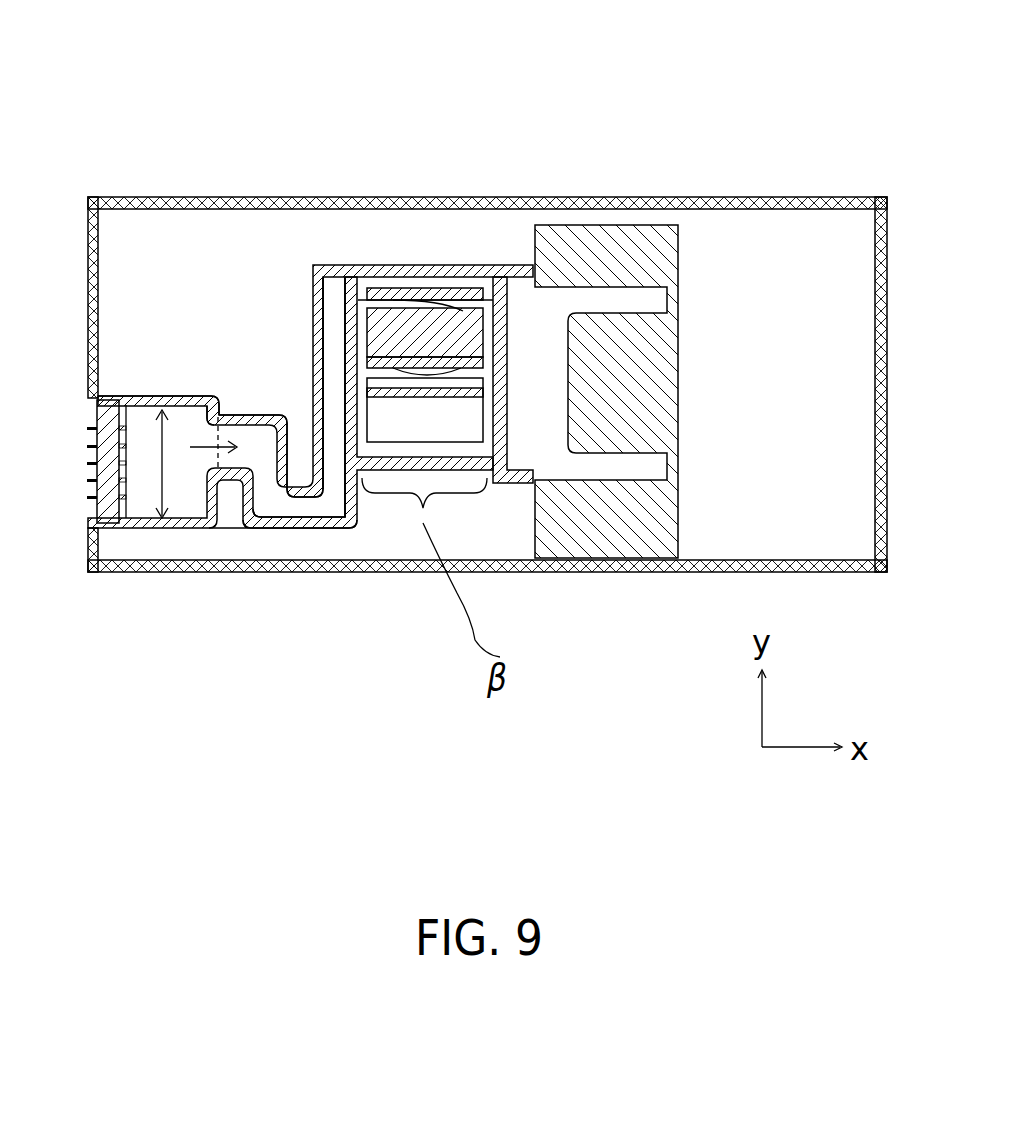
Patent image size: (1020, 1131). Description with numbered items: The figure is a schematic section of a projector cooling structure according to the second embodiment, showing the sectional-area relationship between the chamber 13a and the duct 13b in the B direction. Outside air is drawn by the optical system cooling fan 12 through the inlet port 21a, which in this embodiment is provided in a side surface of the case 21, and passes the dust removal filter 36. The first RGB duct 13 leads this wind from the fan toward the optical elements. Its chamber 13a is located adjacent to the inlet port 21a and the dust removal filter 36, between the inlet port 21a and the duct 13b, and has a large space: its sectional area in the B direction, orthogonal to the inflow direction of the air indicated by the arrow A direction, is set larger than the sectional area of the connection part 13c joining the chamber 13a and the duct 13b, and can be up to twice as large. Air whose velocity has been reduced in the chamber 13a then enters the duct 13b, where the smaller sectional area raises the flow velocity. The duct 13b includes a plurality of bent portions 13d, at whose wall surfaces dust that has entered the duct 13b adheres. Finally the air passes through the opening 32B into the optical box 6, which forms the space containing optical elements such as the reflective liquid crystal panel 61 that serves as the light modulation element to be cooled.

The first RGB duct 13 is at (240, 412).
The chamber 13a is at (190, 463).
The duct 13b is at (283, 510).
The connection part 13c is at (217, 437).
The bent portions 13d is at (271, 545).
The opening 32B is at (350, 283).
The optical box 6 is at (393, 268).
The reflective liquid crystal panel 61 is at (427, 290).
The optical system cooling fan 12 is at (593, 248).
The dust removal filter 36 is at (112, 493).
The case 21 is at (702, 567).
The inlet port 21a is at (87, 498).
The arrow A direction A is at (238, 417).
The B direction B is at (160, 462).